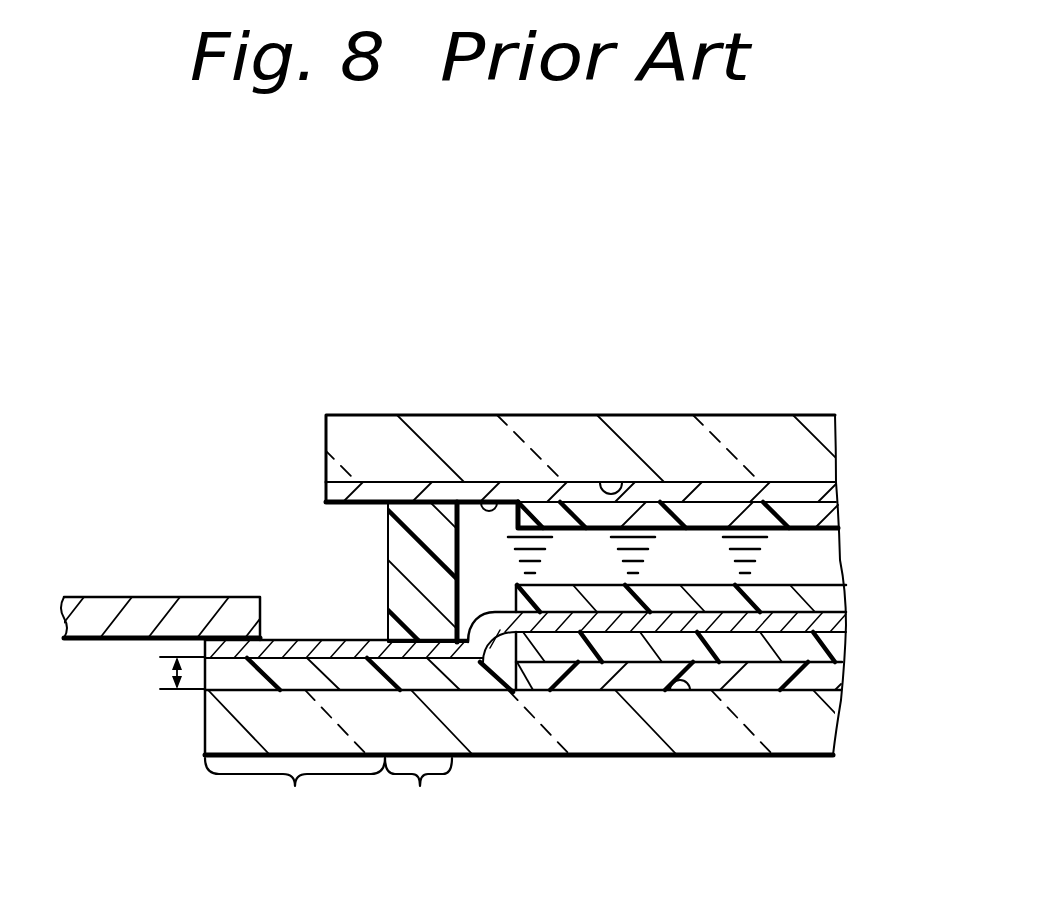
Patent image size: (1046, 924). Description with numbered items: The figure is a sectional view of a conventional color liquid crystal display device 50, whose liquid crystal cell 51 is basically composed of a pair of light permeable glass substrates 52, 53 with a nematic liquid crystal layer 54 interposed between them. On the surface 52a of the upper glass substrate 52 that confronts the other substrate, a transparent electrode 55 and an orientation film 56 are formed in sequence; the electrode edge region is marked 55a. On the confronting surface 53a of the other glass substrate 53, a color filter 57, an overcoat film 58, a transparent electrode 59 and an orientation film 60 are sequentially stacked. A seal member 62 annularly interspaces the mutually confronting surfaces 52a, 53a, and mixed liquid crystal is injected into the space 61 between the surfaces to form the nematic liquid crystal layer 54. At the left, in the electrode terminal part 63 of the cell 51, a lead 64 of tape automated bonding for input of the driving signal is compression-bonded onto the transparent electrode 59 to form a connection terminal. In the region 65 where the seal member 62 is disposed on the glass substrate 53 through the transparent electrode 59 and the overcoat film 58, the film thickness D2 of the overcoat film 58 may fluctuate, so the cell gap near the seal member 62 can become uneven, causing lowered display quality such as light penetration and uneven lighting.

The color liquid crystal display device 50 is at (157, 264).
The liquid crystal cell 51 is at (373, 291).
The glass substrate 52 is at (363, 427).
The surface of glass substrate 52a is at (598, 482).
The glass substrate 53 is at (605, 735).
The surface of glass substrate 53a is at (689, 692).
The nematic liquid crystal layer 54 is at (828, 558).
The transparent electrode 55 is at (752, 496).
The electrode edge 55a is at (487, 505).
The orientation film 56 is at (820, 520).
The color filter 57 is at (836, 673).
The overcoat film 58 is at (836, 650).
The transparent electrode 59 is at (840, 626).
The orientation film 60 is at (838, 606).
The space 61 is at (661, 557).
The seal member 62 is at (400, 548).
The electrode terminal part 63 is at (295, 798).
The lead of TAB 64 is at (98, 607).
The region of the seal member 65 is at (418, 798).
The film thickness of the overcoat film D2 is at (175, 674).